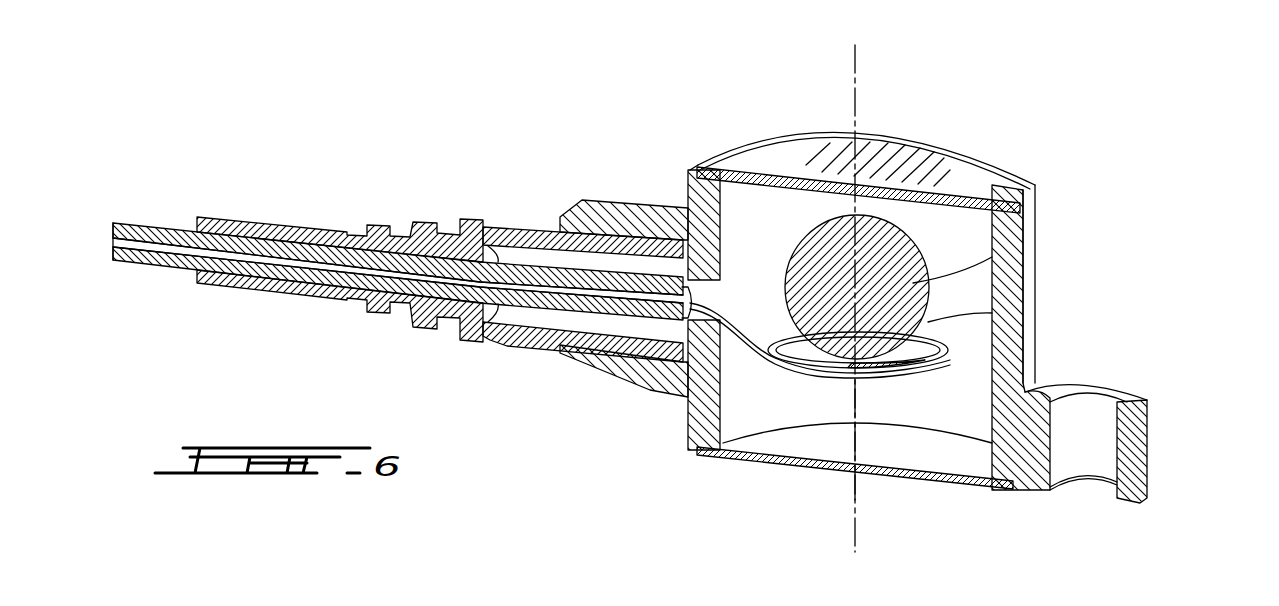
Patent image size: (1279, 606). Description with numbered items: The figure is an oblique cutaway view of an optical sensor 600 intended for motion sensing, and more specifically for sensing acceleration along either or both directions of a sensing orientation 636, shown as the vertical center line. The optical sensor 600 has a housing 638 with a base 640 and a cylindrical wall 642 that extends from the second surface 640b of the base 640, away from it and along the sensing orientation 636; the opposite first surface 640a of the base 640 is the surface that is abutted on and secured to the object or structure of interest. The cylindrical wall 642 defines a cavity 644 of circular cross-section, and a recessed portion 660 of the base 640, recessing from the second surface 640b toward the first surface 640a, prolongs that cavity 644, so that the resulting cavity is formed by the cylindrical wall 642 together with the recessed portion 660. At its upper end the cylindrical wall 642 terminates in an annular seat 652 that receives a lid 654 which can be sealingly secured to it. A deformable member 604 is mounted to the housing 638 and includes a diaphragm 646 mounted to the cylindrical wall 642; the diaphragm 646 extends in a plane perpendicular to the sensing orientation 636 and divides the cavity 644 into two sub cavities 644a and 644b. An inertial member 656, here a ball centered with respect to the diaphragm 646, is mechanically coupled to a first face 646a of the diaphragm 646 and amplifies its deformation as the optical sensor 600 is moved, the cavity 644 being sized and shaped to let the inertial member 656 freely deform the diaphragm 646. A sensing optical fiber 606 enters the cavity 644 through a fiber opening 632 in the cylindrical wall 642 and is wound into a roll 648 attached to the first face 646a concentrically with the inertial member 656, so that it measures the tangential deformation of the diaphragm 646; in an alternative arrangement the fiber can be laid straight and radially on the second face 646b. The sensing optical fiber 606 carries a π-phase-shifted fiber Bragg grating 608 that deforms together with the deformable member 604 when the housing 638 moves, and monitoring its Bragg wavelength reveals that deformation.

The optical sensor 600 is at (362, 135).
The fiber opening 632 is at (613, 382).
The annular seat 652 is at (712, 155).
The recessed portion 660 is at (737, 425).
The sub cavity 644a is at (752, 195).
The sub cavity 644b is at (745, 393).
The lid 654 is at (912, 150).
The cavity 644 is at (947, 223).
The housing 638 is at (1020, 165).
The cylindrical wall 642 is at (1103, 383).
The base 640 is at (1133, 398).
The second surface 640b is at (1117, 377).
The first surface 640a is at (1130, 500).
The inertial member 656 is at (900, 290).
The roll 648 is at (962, 358).
The deformable member 604 is at (978, 340).
The first face 646a is at (985, 365).
The diaphragm 646 is at (950, 370).
The second face 646b is at (993, 377).
The sensing optical fiber 606 is at (797, 377).
The sensing orientation 636 is at (853, 62).
The π-phase-shifted fiber Bragg grating 608 is at (890, 377).